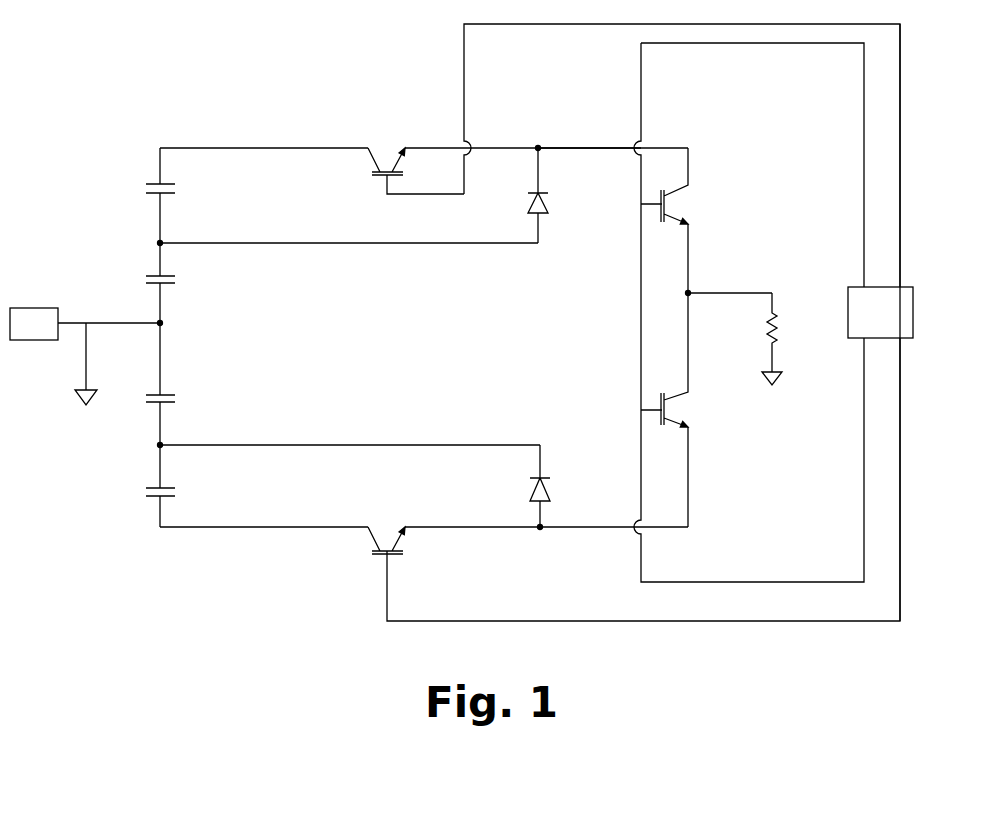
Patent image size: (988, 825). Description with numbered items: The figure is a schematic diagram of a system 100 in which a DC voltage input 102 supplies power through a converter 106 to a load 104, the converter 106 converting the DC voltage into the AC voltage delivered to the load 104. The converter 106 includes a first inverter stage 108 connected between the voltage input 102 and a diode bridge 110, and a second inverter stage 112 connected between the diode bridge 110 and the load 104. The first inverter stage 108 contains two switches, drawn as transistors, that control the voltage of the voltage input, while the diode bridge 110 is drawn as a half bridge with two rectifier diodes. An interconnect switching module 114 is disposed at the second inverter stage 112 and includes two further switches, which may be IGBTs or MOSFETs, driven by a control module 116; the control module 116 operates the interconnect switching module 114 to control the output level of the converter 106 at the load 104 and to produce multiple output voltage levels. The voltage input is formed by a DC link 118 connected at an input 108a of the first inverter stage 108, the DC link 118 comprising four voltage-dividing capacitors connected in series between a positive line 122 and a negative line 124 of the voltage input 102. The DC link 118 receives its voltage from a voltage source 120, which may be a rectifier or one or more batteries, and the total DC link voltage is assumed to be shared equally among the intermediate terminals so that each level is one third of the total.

The system 100 is at (75, 34).
The DC voltage input 102 is at (143, 337).
The load 104 is at (757, 327).
The converter 106 is at (318, 118).
The first inverter stage 108 is at (443, 120).
The input of the first inverter stage 108a is at (172, 232).
The diode bridge 110 is at (592, 142).
The second inverter stage 112 is at (690, 140).
The interconnect switching module 114 is at (705, 285).
The control module 116 is at (894, 323).
The DC link 118 is at (160, 372).
The voltage source 120 is at (48, 333).
The positive line 122 is at (188, 147).
The negative line 124 is at (203, 528).